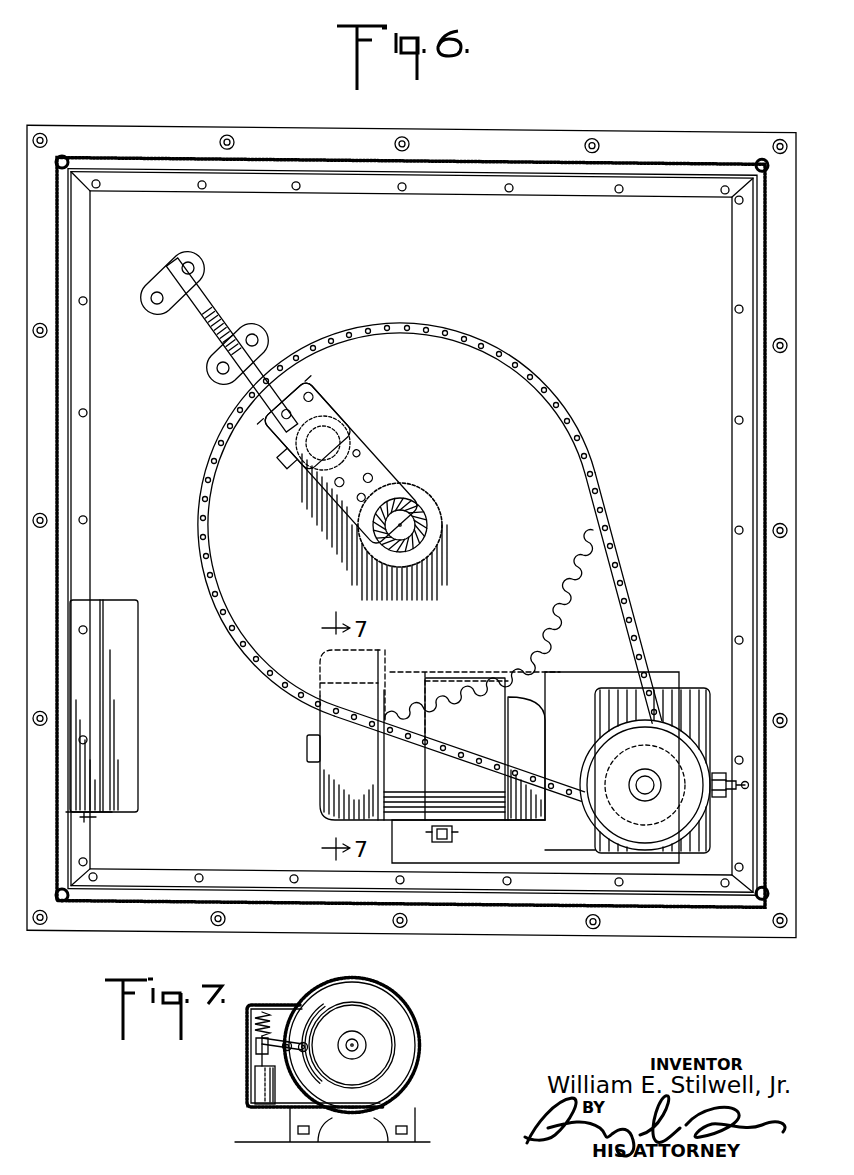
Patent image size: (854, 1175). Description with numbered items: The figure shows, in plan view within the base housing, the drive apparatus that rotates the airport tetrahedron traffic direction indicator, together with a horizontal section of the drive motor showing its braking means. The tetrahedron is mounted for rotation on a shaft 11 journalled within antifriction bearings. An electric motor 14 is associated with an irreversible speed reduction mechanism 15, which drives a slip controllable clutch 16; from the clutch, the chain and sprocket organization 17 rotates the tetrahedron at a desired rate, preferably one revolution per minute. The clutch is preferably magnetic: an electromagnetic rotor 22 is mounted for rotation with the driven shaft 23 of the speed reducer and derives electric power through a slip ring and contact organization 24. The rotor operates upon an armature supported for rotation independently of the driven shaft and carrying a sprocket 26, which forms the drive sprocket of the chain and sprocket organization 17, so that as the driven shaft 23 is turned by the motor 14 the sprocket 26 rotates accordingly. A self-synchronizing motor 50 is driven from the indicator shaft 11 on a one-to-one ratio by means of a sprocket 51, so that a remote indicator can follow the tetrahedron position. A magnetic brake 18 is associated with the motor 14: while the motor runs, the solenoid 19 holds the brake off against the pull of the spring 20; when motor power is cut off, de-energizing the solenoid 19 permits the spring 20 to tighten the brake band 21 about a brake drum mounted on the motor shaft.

In FIG. 6, the shaft 11 is at (428, 521).
In FIG. 6, the electric motor 14 is at (348, 770).
In FIG. 6, the irreversible speed reduction mechanism 15 is at (646, 832).
In FIG. 6, the slip controllable clutch 16 is at (653, 833).
In FIG. 6, the chain and sprocket organization 17 is at (659, 631).
In FIG. 6, the electromagnetic rotor 22 is at (595, 818).
In FIG. 6, the driven shaft 23 is at (640, 787).
In FIG. 6, the slip ring and contact organization 24 is at (726, 814).
In FIG. 6, the sprocket 26 is at (617, 718).
In FIG. 6, the self-synchronizing motor 50 is at (346, 430).
In FIG. 6, the sprocket 51 is at (410, 455).
In FIG. 7, the magnetic brake 18 is at (239, 1079).
In FIG. 7, the solenoid 19 is at (251, 1107).
In FIG. 7, the spring 20 is at (270, 1016).
In FIG. 7, the brake band 21 is at (307, 1040).